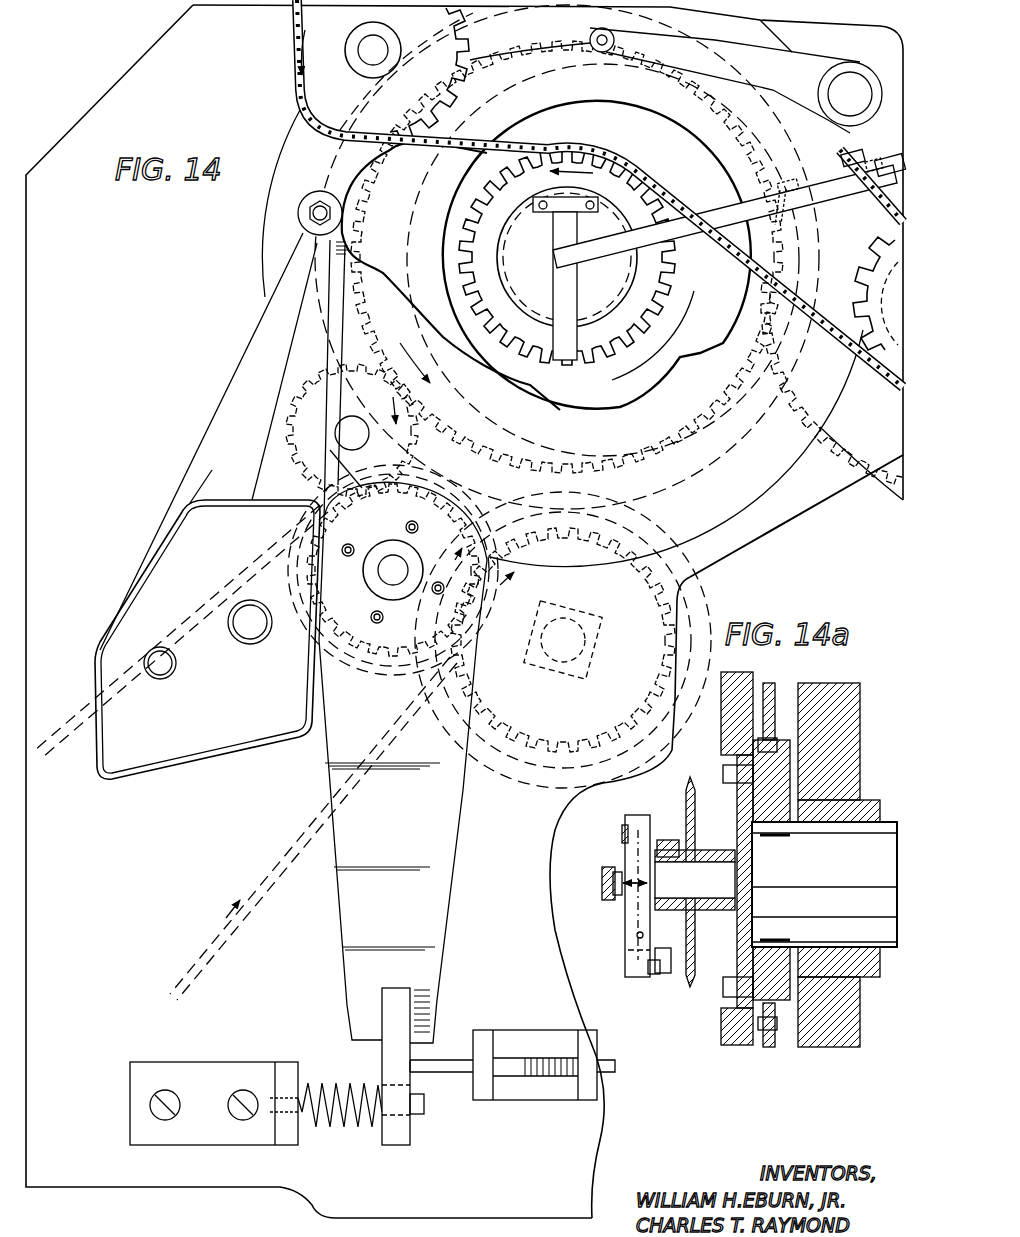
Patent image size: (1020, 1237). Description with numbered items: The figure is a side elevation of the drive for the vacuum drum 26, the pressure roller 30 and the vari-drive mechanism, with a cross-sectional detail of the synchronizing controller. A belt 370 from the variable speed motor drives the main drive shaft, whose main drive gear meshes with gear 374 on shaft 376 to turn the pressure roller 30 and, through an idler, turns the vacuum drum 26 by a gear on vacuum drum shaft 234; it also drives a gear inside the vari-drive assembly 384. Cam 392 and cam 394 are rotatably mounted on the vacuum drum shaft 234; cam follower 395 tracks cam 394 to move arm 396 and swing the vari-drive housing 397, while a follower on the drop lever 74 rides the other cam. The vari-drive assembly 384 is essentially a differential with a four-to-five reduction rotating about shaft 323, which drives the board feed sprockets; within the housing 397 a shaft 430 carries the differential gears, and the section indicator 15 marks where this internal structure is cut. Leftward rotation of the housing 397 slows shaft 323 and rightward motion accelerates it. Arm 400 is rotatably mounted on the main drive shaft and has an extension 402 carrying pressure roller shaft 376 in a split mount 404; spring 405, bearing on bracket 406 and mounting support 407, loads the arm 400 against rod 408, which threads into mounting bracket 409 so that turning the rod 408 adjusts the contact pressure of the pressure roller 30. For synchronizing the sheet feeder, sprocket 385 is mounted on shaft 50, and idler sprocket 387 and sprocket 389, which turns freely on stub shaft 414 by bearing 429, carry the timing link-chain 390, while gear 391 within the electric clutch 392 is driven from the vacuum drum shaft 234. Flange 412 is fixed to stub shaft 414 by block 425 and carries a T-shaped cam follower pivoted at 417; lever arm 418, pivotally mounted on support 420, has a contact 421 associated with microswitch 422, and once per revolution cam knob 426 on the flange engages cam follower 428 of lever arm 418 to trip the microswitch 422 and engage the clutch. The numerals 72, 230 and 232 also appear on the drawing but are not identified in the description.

In FIG. 14, the section line 15 is at (400, 519).
In FIG. 14, the vacuum drum 26 is at (264, 236).
In FIG. 14, the pressure roller 30 is at (512, 760).
In FIG. 14, the shaft 50 is at (905, 350).
In FIG. 14, the roller 72 is at (852, 86).
In FIG. 14, the drop lever 74 is at (796, 84).
In FIG. 14A, the hub 230 is at (790, 801).
In FIG. 14A, the plate 232 is at (722, 735).
In FIG. 14A, the vacuum drum shaft 234 is at (862, 877).
In FIG. 14, the shaft 323 is at (253, 634).
In FIG. 14, the belt 370 is at (232, 946).
In FIG. 14, the gear 374 is at (546, 784).
In FIG. 14, the pressure roller shaft 376 is at (552, 648).
In FIG. 14, the vari-drive assembly 384 is at (158, 587).
In FIG. 14, the sprocket 385 is at (900, 310).
In FIG. 14, the idler sprocket 387 is at (438, 89).
In FIG. 14A, the sprocket 389 is at (694, 990).
In FIG. 14, the timing link-chain 390 is at (599, 260).
In FIG. 14, the gear 391 is at (880, 500).
In FIG. 14, the electric clutch 392 is at (800, 448).
In FIG. 14, the cam 394 is at (412, 196).
In FIG. 14, the cam follower 395 is at (312, 197).
In FIG. 14, the arm 396 is at (614, 40).
In FIG. 14, the vari-drive housing 397 is at (172, 531).
In FIG. 14, the arm 400 is at (418, 912).
In FIG. 14, the extension 402 is at (507, 673).
In FIG. 14, the split mount 404 is at (602, 602).
In FIG. 14, the spring 405 is at (320, 1081).
In FIG. 14, the bracket 406 is at (396, 1143).
In FIG. 14, the mounting support 407 is at (216, 1071).
In FIG. 14, the rod 408 is at (448, 1073).
In FIG. 14, the mounting bracket 409 is at (525, 1031).
In FIG. 14A, the flange 412 is at (635, 815).
In FIG. 14A, the stub shaft 414 is at (712, 890).
In FIG. 14, the pivot 417 is at (590, 204).
In FIG. 14, the lever arm 418 is at (703, 214).
In FIG. 14A, the lever arm 418 is at (607, 866).
In FIG. 14, the support 420 is at (780, 176).
In FIG. 14, the contact 421 is at (842, 148).
In FIG. 14, the microswitch 422 is at (890, 156).
In FIG. 14A, the block 425 is at (628, 951).
In FIG. 14A, the cam knob 426 is at (666, 840).
In FIG. 14A, the cam follower 428 is at (614, 904).
In FIG. 14A, the bearing 429 is at (706, 926).
In FIG. 14, the shaft 430 is at (160, 672).